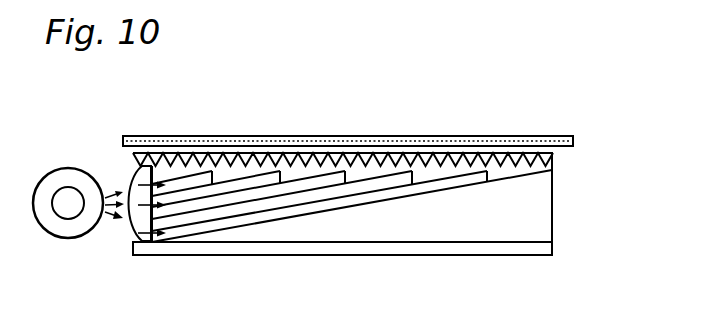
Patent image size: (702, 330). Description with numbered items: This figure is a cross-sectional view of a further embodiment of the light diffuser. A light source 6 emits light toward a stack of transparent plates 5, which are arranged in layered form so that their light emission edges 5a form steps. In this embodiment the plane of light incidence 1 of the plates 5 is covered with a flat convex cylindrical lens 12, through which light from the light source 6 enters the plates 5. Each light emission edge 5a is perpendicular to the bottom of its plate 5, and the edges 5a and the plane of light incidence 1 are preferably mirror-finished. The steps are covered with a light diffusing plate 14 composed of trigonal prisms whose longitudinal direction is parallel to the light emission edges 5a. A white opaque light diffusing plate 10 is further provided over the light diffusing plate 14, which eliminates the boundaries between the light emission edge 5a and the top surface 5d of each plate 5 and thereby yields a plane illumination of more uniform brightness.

The plane of incidence of light 1 is at (114, 173).
The transparent plate 5 is at (289, 215).
The light emission edge 5a is at (342, 118).
The top surface of the plate 5d is at (343, 127).
The light source 6 is at (64, 236).
The light diffusing plate 10 is at (505, 137).
The lens 12 is at (135, 226).
The light diffusing plate having a prism 14 is at (343, 113).